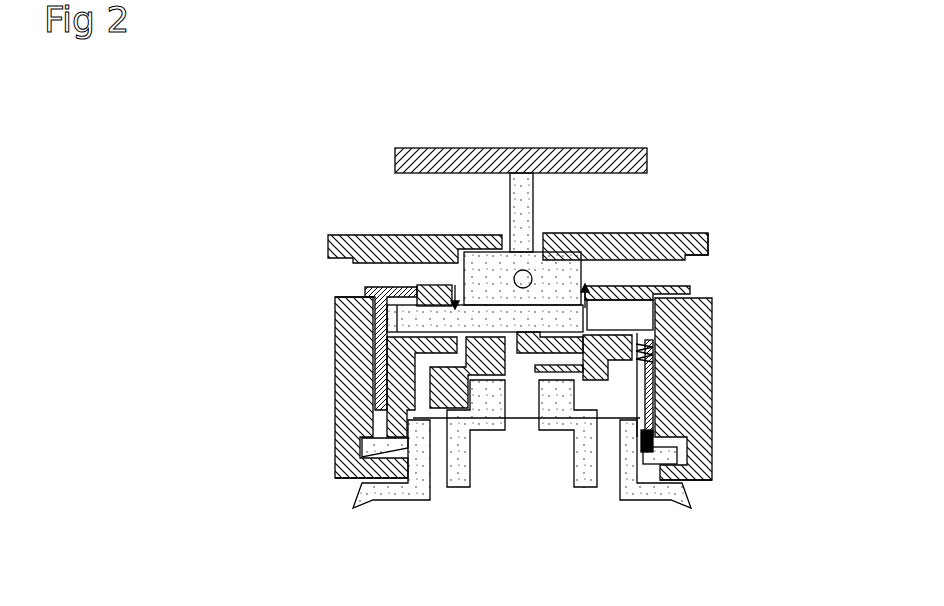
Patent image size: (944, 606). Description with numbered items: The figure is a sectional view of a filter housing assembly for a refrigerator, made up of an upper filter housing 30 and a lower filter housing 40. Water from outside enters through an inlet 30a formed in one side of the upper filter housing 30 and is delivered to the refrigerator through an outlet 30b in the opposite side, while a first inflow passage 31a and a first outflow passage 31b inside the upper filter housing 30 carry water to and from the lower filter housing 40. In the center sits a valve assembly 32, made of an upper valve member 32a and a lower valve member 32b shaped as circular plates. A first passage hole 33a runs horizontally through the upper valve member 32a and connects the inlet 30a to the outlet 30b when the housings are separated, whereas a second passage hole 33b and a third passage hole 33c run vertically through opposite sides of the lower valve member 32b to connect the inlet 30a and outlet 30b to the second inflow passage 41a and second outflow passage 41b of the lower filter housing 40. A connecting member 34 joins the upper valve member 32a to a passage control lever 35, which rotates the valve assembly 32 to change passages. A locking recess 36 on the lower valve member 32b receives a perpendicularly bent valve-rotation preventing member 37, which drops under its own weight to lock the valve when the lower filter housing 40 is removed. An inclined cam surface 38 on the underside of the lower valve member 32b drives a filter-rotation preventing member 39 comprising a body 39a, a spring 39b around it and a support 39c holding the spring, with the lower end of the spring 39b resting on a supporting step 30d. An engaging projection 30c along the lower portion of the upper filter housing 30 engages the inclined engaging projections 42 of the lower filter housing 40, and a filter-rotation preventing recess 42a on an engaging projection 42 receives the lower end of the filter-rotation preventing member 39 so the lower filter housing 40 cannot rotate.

The upper filter housing 30 is at (352, 357).
The inlet 30a is at (362, 270).
The outlet 30b is at (712, 262).
The engaging projection 30c is at (335, 473).
The supporting step 30d is at (635, 373).
The first inflow passage 31a is at (382, 350).
The first outflow passage 31b is at (698, 268).
The valve assembly 32 is at (573, 275).
The upper valve member 32a is at (492, 246).
The lower valve member 32b is at (640, 312).
The first passage hole 33a is at (533, 273).
The second passage hole 33b is at (418, 294).
The third passage hole 33c is at (585, 335).
The connecting member 34 is at (535, 187).
The passage control lever 35 is at (476, 148).
The locking recess 36 is at (353, 234).
The valve-rotation preventing member 37 is at (378, 423).
The inclined cam surface 38 is at (682, 288).
The filter-rotation preventing member 39 is at (635, 440).
The body 39a is at (673, 447).
The spring 39b is at (640, 371).
The support 39c is at (640, 350).
The lower filter housing 40 is at (640, 498).
The second inflow passage 41a is at (435, 480).
The second outflow passage 41b is at (520, 410).
The engaging projection 42 is at (390, 456).
The filter-rotation preventing recess 42a is at (672, 480).